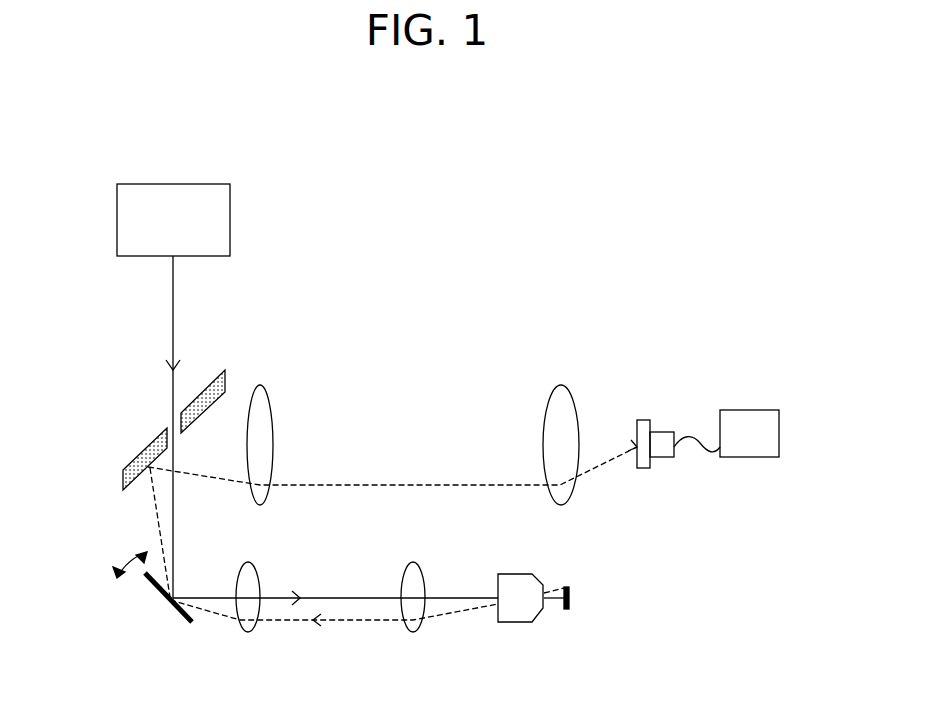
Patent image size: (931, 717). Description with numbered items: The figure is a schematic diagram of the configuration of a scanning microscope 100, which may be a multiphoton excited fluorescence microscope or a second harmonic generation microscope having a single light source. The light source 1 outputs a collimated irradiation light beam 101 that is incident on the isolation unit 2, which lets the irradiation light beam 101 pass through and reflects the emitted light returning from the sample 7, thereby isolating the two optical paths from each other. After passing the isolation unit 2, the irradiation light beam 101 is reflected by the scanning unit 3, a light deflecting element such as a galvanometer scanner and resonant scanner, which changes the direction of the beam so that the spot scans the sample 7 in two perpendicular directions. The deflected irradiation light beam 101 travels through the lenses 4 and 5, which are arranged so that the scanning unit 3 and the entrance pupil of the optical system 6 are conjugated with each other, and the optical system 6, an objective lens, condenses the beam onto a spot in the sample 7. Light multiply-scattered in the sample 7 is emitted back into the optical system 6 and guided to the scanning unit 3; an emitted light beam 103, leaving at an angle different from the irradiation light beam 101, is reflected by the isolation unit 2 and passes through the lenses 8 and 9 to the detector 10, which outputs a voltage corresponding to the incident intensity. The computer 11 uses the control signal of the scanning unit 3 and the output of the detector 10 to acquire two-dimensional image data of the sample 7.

The microscope 100 is at (505, 134).
The light source 1 is at (230, 218).
The irradiation light beam 101 is at (173, 300).
The isolation unit 2 is at (133, 460).
The scanning unit 3 is at (168, 598).
The lens 4 is at (248, 632).
The lens 5 is at (413, 632).
The optical system 6 is at (520, 622).
The sample 7 is at (567, 609).
The lens 8 is at (261, 385).
The lens 9 is at (562, 385).
The detector 10 is at (643, 420).
The computer 11 is at (748, 410).
The emitted light beam 103 is at (342, 622).